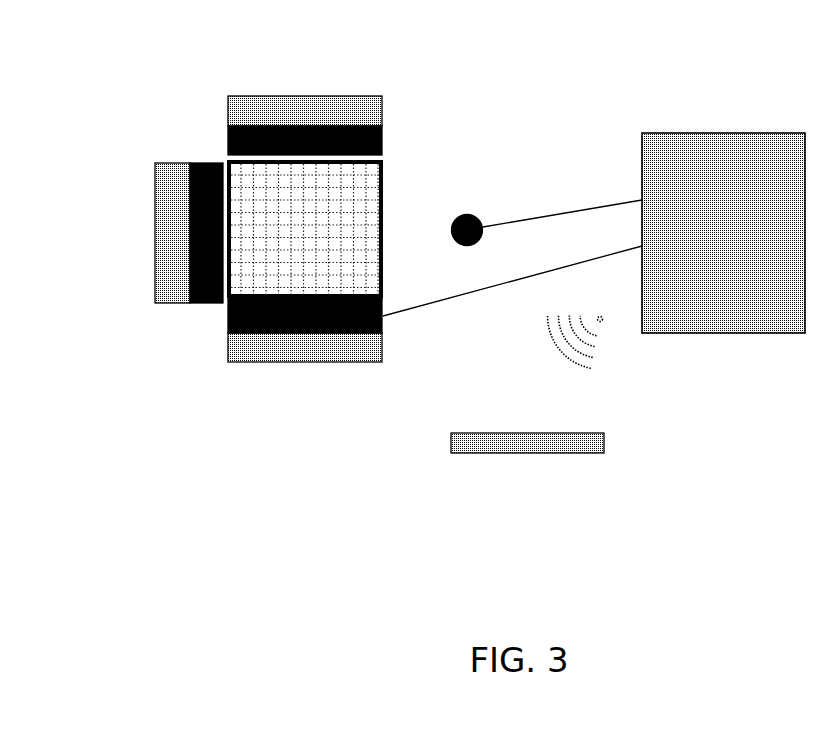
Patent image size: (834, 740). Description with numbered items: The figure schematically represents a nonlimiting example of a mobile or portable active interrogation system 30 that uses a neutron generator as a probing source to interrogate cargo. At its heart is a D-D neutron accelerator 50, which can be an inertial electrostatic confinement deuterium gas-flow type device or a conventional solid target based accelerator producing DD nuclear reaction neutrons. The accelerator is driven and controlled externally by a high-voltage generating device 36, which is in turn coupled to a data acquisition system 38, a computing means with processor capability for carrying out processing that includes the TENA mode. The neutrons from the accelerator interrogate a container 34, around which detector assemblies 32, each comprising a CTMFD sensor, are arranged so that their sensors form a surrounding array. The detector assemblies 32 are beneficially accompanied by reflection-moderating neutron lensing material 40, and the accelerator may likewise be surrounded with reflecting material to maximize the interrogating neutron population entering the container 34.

The system 30 is at (300, 457).
The detector assemblies 32 is at (163, 225).
The container 34 is at (280, 193).
The high-voltage generating device 36 is at (719, 153).
The data acquisition system 38 is at (510, 448).
The reflection-moderating neutron lensing material 40 is at (187, 266).
The D-D neutron accelerator 50 is at (473, 217).